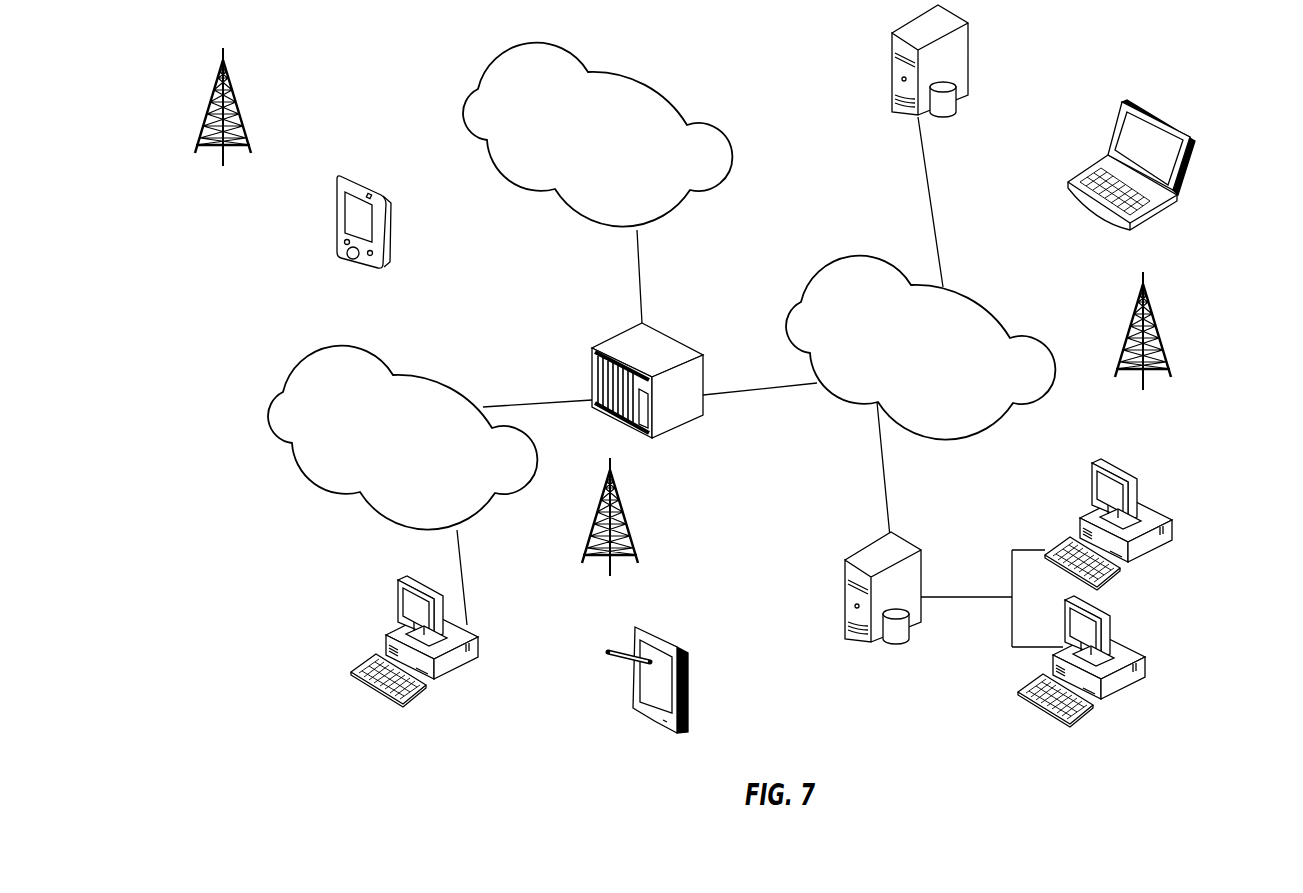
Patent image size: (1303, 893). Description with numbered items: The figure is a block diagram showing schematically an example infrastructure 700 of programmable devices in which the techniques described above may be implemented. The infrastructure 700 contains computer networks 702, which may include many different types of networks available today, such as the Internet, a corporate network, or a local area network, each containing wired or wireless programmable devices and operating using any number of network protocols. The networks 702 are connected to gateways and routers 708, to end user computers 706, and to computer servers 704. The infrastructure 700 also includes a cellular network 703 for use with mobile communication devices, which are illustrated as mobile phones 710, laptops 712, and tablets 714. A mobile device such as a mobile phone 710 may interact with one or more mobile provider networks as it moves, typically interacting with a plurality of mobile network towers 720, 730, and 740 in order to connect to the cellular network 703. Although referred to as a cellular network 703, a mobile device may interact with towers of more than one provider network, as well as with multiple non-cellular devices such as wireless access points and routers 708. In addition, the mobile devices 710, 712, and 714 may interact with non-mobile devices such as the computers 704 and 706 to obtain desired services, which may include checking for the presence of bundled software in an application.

The infrastructure 700 is at (1052, 88).
The computer networks 702 is at (382, 363).
The cellular network 703 is at (633, 78).
The computer servers 704 is at (892, 57).
The end user computers 706 is at (1137, 485).
The gateways and routers 708 is at (668, 335).
The mobile phones 710 is at (367, 183).
The laptops 712 is at (1170, 127).
The tablets 714 is at (672, 637).
The mobile network tower 720 is at (610, 531).
The mobile network tower 730 is at (1143, 346).
The mobile network tower 740 is at (223, 121).